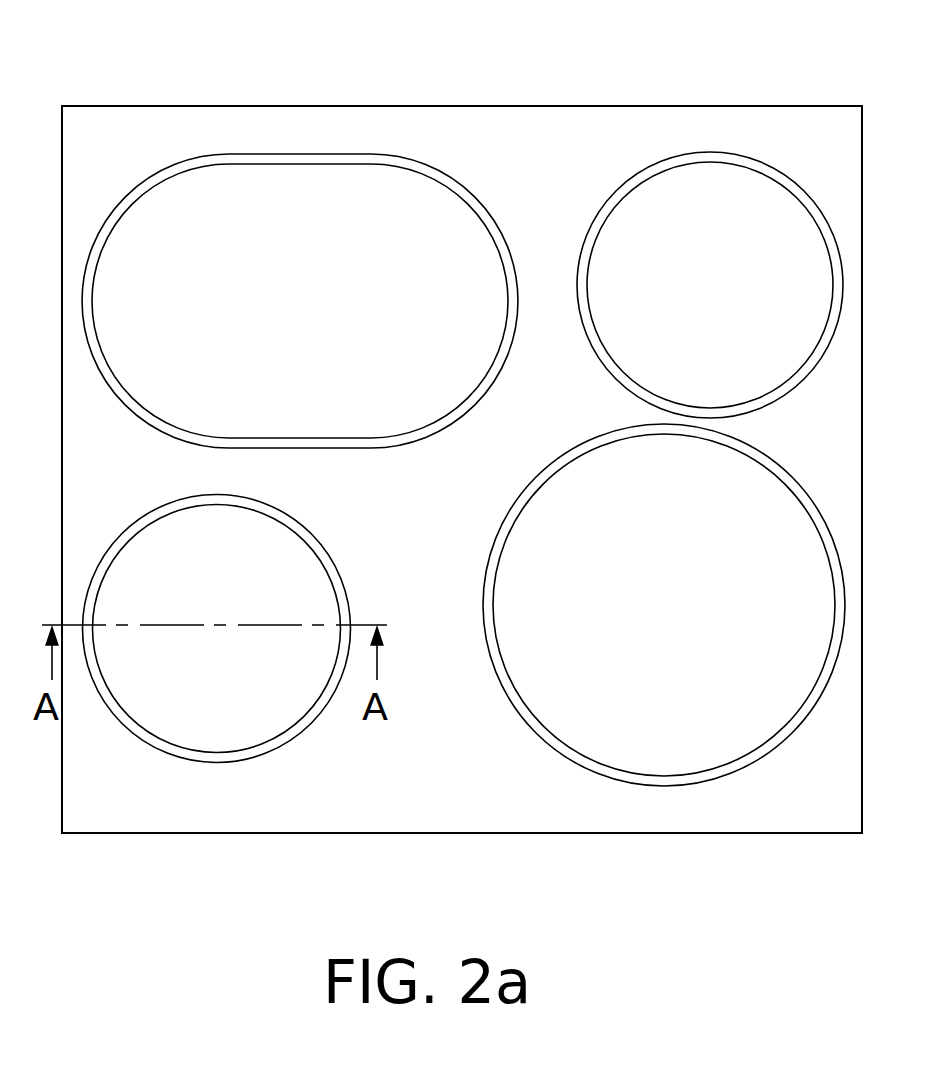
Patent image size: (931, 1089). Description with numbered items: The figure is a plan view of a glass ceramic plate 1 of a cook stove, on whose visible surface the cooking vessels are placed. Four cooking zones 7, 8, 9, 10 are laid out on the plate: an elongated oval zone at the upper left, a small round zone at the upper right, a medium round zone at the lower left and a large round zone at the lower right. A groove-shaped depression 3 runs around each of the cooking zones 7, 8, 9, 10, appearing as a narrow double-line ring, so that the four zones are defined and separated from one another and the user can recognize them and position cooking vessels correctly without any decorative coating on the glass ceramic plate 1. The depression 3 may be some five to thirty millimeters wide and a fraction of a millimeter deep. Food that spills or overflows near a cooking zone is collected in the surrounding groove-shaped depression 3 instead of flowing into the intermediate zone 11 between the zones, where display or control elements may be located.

The glass ceramic plate 1 is at (552, 88).
The groove-shaped depression 3 is at (306, 155).
The cooking zone 7 is at (293, 307).
The cooking zone 8 is at (722, 274).
The cooking zone 9 is at (236, 592).
The cooking zone 10 is at (638, 583).
The intermediate zone 11 is at (418, 553).